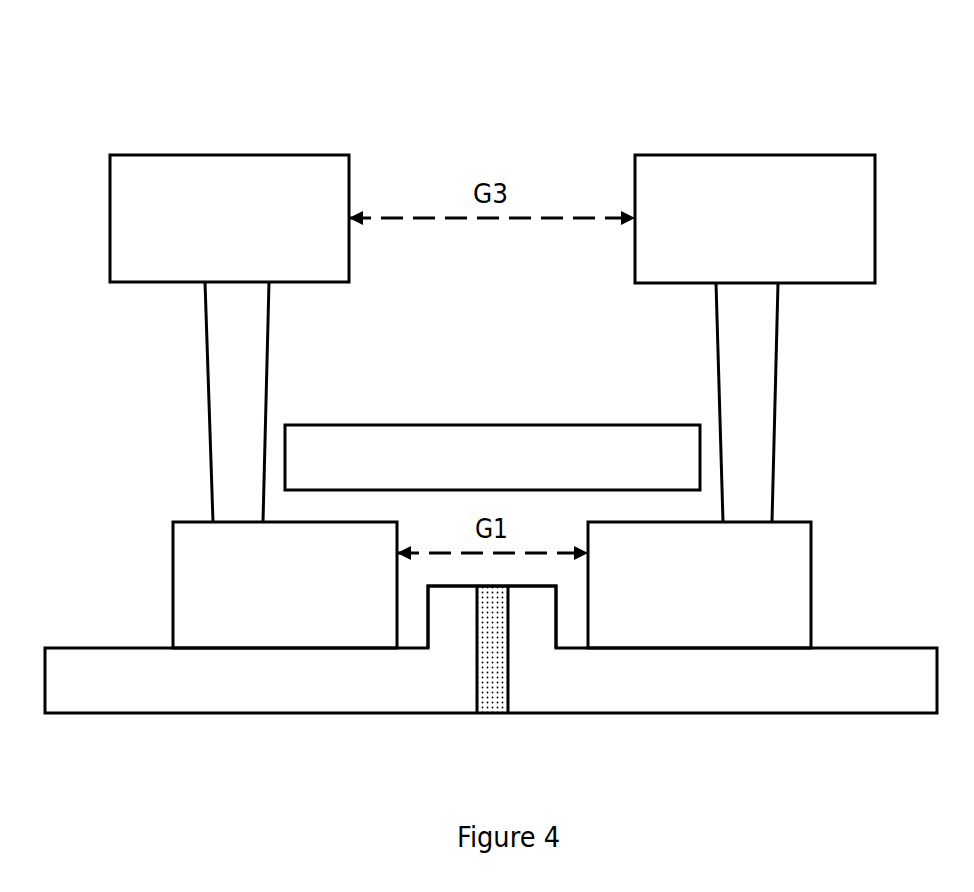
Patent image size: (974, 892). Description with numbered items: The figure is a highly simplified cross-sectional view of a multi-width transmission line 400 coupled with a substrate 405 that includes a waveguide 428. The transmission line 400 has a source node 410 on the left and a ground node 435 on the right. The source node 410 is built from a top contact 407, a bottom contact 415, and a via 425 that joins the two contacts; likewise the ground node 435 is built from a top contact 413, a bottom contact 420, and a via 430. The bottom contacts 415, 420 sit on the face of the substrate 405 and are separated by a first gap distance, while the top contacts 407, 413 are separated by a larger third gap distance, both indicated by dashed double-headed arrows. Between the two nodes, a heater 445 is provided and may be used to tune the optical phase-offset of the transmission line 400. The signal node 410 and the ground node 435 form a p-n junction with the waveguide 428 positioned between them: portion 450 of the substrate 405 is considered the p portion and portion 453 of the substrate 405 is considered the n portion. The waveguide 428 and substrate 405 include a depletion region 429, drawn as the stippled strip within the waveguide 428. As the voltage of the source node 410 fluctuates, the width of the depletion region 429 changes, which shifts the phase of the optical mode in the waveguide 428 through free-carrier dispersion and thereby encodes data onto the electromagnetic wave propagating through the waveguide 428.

The transmission line 400 is at (537, 108).
The substrate 405 is at (491, 649).
The top contact 407 is at (229, 218).
The source node 410 is at (130, 125).
The top contact 413 is at (755, 219).
The bottom contact 415 is at (285, 585).
The bottom contact 420 is at (699, 585).
The via 425 is at (237, 402).
The waveguide 428 is at (524, 628).
The depletion region 429 is at (493, 688).
The via 430 is at (747, 402).
The ground node 435 is at (837, 115).
The heater 445 is at (492, 457).
The portion of the substrate 450 is at (330, 683).
The portion of the substrate 453 is at (704, 687).